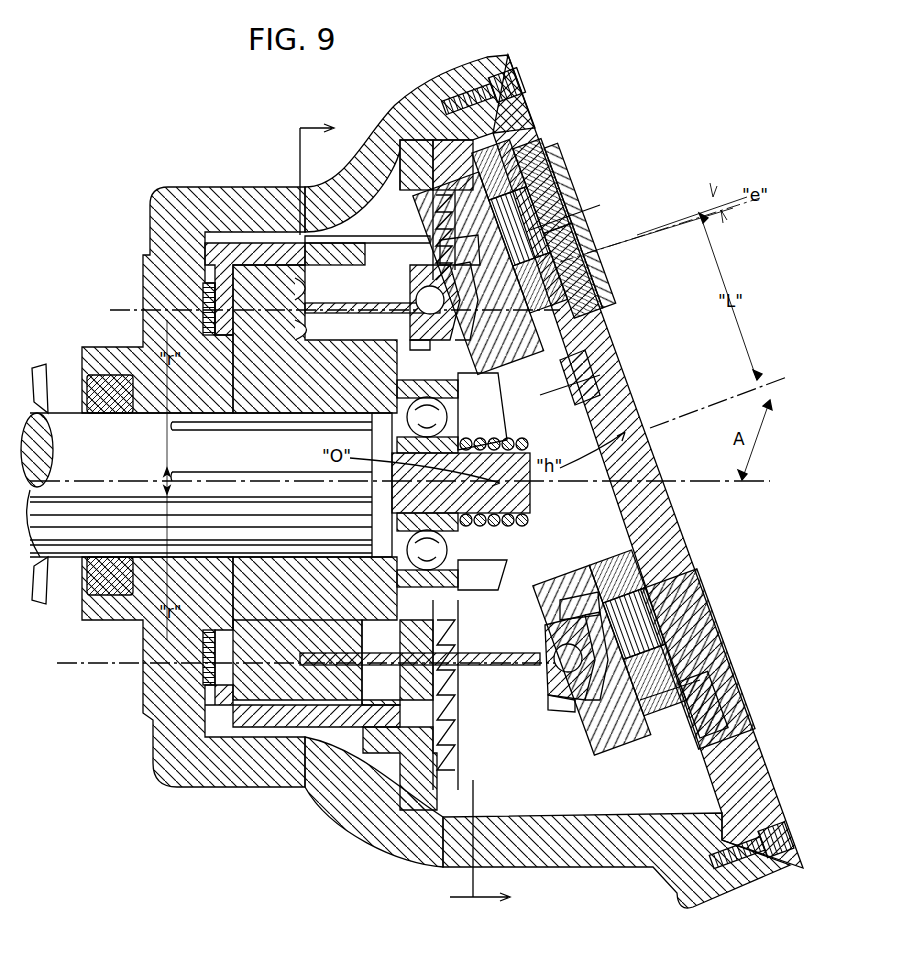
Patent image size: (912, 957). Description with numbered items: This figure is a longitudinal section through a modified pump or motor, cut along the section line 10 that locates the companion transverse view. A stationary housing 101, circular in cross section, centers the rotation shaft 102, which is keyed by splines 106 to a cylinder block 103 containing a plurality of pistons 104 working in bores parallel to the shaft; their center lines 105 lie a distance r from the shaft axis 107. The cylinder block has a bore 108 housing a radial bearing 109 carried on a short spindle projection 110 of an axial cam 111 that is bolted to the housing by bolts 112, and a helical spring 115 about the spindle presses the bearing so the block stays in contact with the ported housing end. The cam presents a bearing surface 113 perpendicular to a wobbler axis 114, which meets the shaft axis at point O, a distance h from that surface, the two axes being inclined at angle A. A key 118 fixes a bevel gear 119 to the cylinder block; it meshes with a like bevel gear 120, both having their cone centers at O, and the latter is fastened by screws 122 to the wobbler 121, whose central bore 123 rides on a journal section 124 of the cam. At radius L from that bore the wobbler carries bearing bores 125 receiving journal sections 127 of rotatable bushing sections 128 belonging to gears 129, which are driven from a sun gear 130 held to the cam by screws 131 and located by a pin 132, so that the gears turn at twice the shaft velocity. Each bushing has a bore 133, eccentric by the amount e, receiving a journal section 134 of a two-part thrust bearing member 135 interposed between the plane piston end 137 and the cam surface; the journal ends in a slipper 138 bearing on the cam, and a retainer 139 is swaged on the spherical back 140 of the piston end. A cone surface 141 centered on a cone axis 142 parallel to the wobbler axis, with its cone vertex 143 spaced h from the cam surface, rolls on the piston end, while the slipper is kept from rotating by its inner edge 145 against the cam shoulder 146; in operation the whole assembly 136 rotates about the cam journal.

The section line 10- 10 is at (300, 128).
The stationary housing 101 is at (200, 187).
The rotation shaft 102 is at (80, 440).
The cylinder block 103 is at (268, 245).
The piston 104 is at (296, 290).
The piston center line 105 is at (128, 310).
The splines 106 is at (240, 452).
The shaft axis 107 is at (66, 481).
The bore 108 is at (397, 588).
The radial bearing 109 is at (397, 390).
The spindle projection 110 is at (400, 492).
The axial cam 111 is at (730, 670).
The bolts 112 is at (508, 78).
The bearing surface 113 is at (550, 235).
The wobbler axis 114 is at (694, 400).
The helical spring 115 is at (492, 427).
The key 118 is at (362, 238).
The bevel gear 119 is at (402, 96).
The bevel gear 120 is at (530, 150).
The wobbler 121 is at (545, 215).
The screws 122 is at (540, 192).
The central bore 123 is at (590, 360).
The journal section 124 is at (620, 535).
The bearing bores 125 is at (735, 587).
The journal section 127 is at (540, 205).
The bushing section 128 is at (545, 245).
The gears 129 is at (430, 220).
The sun gear 130 is at (545, 568).
The screws 131 is at (585, 392).
The pin 132 is at (580, 555).
The bore 133 is at (665, 655).
The journal section 134 is at (655, 630).
The thrust bearing member 135 is at (402, 276).
The assembly 136 is at (656, 770).
The plane piston end 137 is at (408, 325).
The slipper 138 is at (570, 285).
The retainer 139 is at (412, 282).
The spherical back 140 is at (412, 345).
The cone surface 141 is at (535, 653).
The cone axis 142 is at (666, 224).
The cone vertex 143 is at (565, 728).
The inner edge 145 is at (575, 312).
The cam shoulder 146 is at (580, 335).